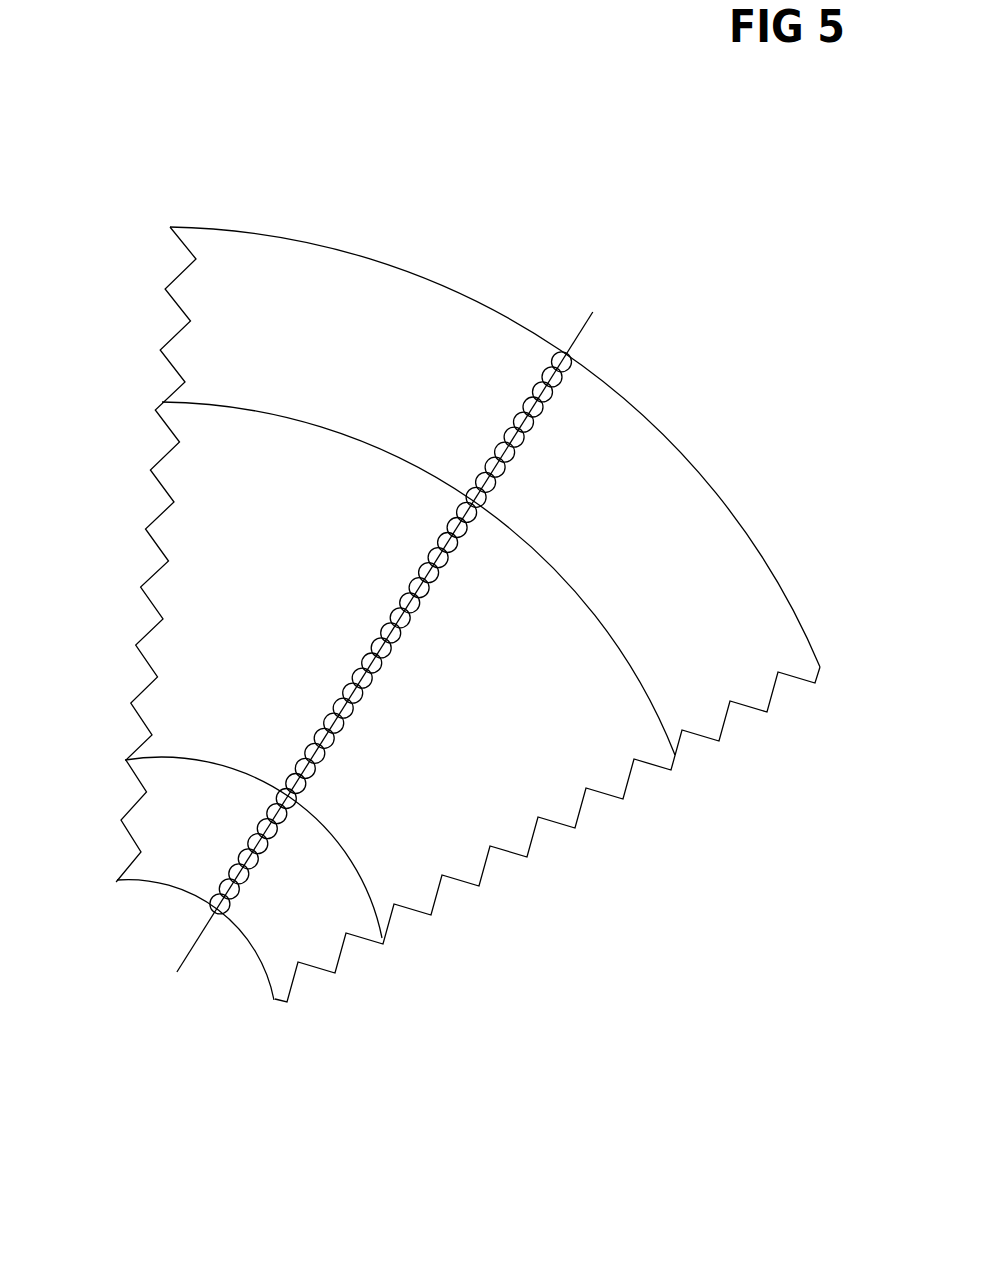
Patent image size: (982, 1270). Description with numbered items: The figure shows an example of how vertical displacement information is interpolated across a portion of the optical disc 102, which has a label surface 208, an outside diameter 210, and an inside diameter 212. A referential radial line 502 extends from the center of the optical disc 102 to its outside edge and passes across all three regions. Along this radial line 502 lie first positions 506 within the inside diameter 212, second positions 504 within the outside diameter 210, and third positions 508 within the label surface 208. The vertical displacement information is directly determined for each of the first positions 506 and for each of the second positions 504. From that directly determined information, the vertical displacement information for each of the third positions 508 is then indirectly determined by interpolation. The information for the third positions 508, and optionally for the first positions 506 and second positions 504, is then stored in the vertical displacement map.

The optical disc 102 is at (390, 1042).
The label surface 208 is at (170, 521).
The outside diameter 210 is at (385, 212).
The inside diameter 212 is at (143, 869).
The referential radial line 502 is at (590, 332).
The second positions 504 is at (467, 497).
The first positions 506 is at (210, 905).
The third positions 508 is at (282, 791).